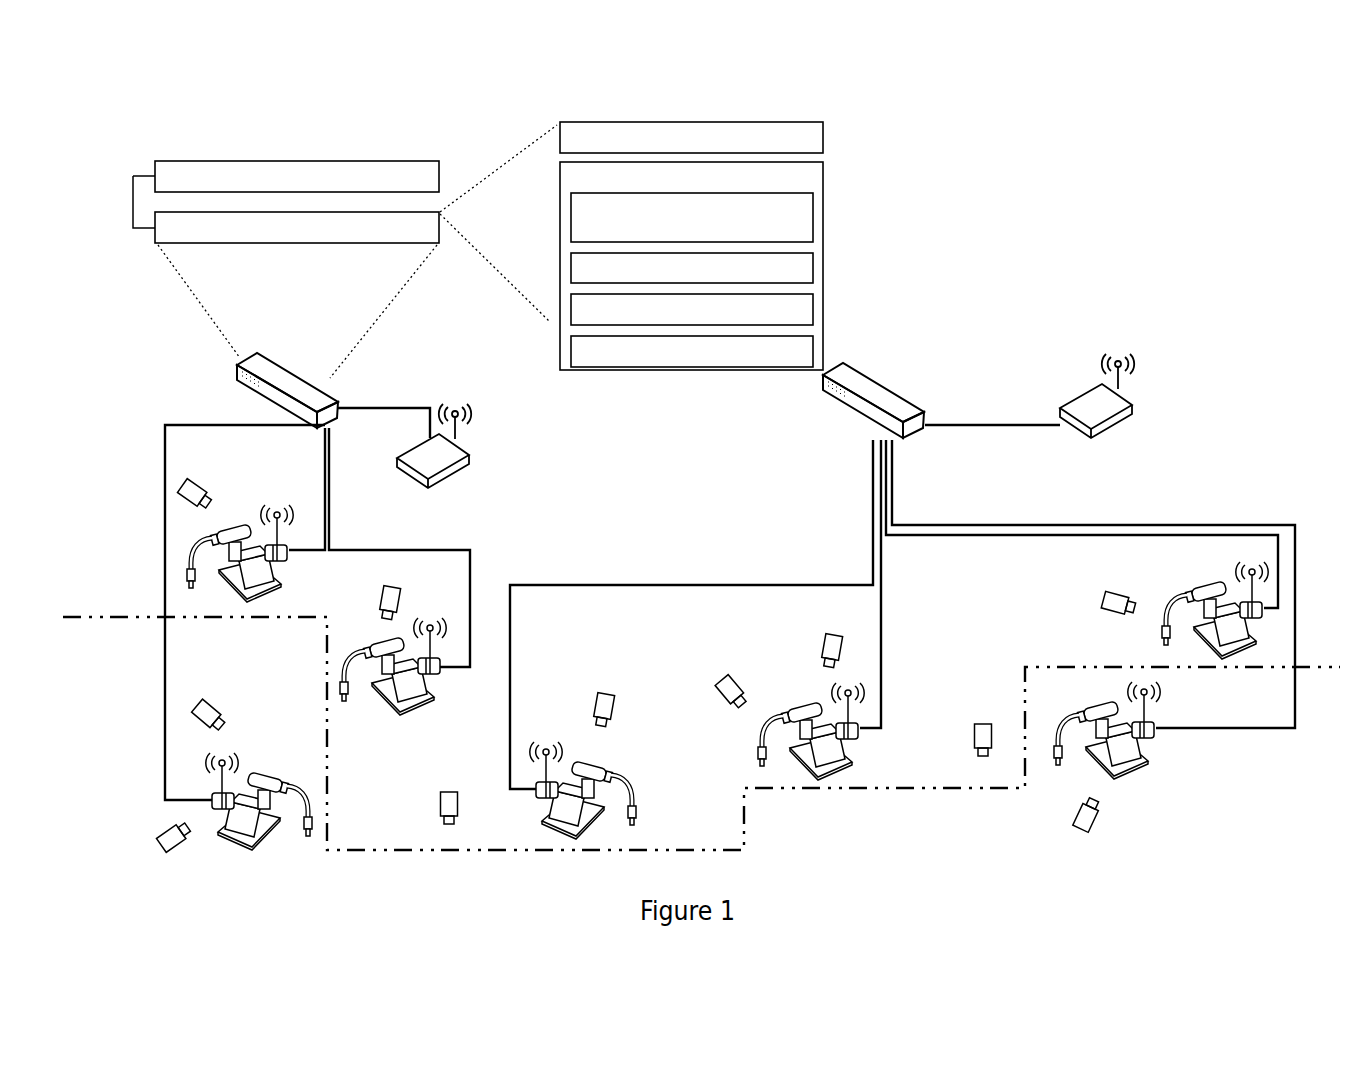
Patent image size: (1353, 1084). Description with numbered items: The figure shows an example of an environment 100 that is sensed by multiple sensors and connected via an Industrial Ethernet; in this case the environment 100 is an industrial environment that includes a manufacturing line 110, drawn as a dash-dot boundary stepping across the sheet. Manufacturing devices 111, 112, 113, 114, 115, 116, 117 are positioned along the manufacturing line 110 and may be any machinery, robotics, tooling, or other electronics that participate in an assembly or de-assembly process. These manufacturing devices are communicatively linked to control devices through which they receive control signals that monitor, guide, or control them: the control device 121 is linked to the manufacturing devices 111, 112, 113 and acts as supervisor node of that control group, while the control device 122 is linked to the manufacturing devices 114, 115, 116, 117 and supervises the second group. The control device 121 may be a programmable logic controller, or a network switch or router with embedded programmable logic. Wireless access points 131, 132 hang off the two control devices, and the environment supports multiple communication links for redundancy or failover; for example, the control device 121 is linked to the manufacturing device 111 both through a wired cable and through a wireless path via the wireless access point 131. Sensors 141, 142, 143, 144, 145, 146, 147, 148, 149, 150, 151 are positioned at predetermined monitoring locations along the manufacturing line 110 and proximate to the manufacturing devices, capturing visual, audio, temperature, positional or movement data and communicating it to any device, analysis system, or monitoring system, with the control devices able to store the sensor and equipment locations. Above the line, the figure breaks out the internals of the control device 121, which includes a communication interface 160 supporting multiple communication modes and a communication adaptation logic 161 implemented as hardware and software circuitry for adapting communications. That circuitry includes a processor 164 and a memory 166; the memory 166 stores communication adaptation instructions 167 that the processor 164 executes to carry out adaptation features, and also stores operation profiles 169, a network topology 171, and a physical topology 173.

The environment 100 is at (124, 112).
The manufacturing line 110 is at (970, 795).
The manufacturing device 111 is at (258, 594).
The manufacturing device 112 is at (411, 706).
The manufacturing device 113 is at (246, 840).
The manufacturing device 114 is at (598, 758).
The manufacturing device 115 is at (803, 700).
The manufacturing device 116 is at (1120, 766).
The manufacturing device 117 is at (1203, 581).
The control device 121 is at (247, 394).
The control device 122 is at (870, 378).
The wireless access point 131 is at (458, 476).
The wireless access point 132 is at (1121, 424).
The sensor 141 is at (196, 484).
The sensor 142 is at (394, 585).
The sensor 143 is at (214, 704).
The sensor 144 is at (173, 849).
The sensor 145 is at (450, 790).
The sensor 146 is at (605, 698).
The sensor 147 is at (720, 681).
The sensor 148 is at (836, 631).
The sensor 149 is at (982, 726).
The sensor 150 is at (1084, 836).
The sensor 151 is at (1108, 592).
The communication interface 160 is at (297, 176).
The communication adaptation logic 161 is at (297, 227).
The processor 164 is at (691, 137).
The memory 166 is at (691, 266).
The communication adaptation instructions 167 is at (692, 217).
The operation profiles 169 is at (692, 268).
The network topology 171 is at (692, 309).
The physical topology 173 is at (692, 351).